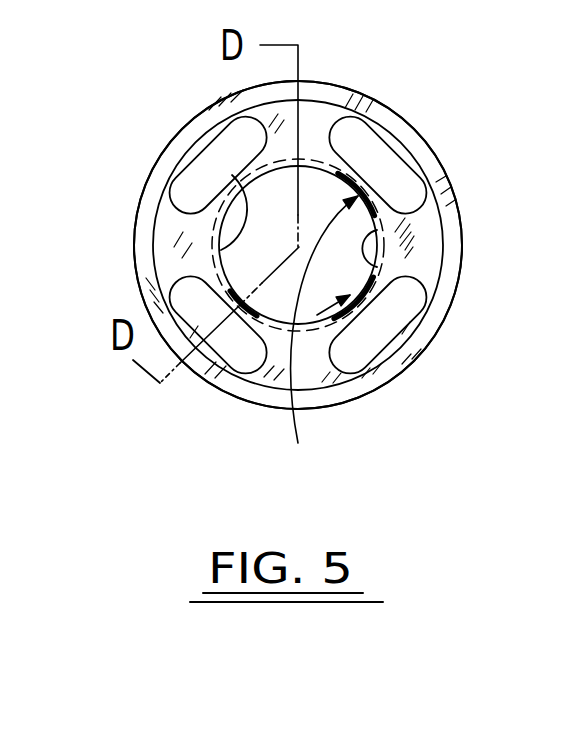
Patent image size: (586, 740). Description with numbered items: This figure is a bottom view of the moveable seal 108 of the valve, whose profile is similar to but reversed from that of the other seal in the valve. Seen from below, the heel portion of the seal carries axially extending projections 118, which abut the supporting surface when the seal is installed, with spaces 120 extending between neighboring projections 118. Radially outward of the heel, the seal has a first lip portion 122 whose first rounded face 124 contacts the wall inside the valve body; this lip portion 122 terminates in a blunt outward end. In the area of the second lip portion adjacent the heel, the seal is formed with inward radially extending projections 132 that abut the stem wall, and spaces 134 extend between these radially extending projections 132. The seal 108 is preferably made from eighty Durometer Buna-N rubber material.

The seal 108 is at (467, 133).
The axially extending projections 118 is at (387, 163).
The spaces 120 is at (180, 253).
The first lip portion 122 is at (413, 240).
The first rounded face 124 is at (463, 223).
The inward radially extending projections 132 is at (233, 180).
The spaces 134 is at (324, 345).